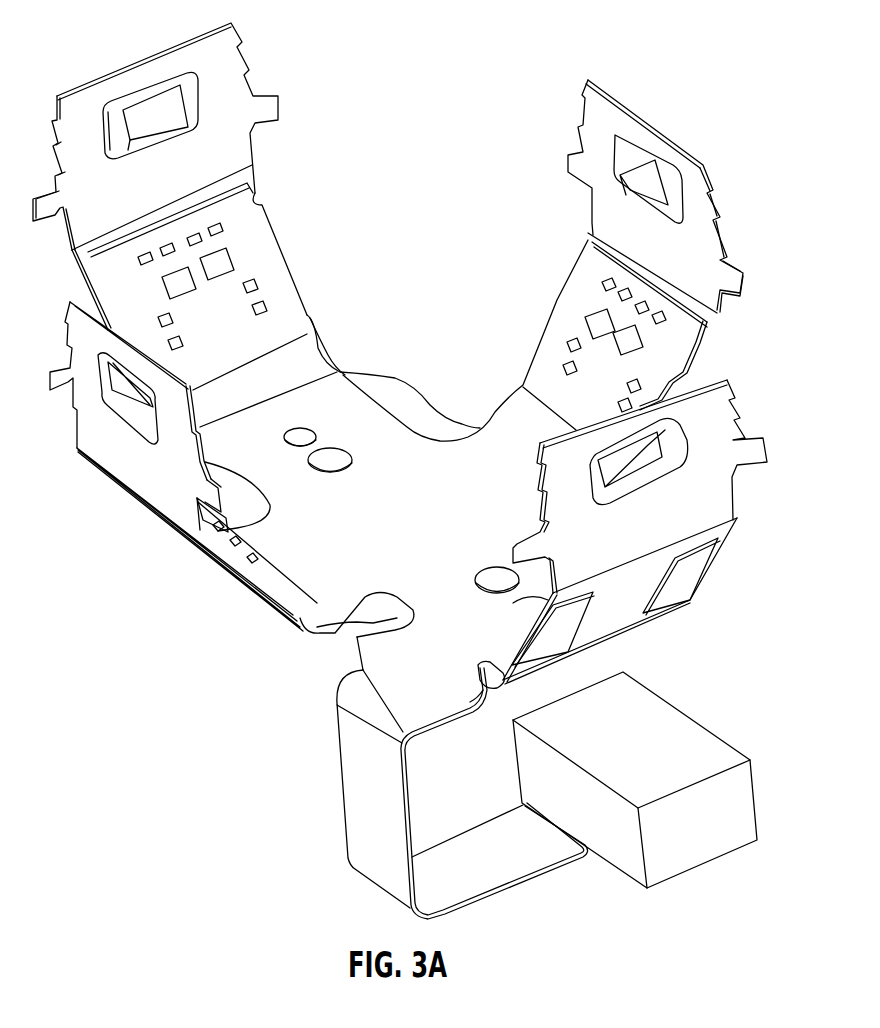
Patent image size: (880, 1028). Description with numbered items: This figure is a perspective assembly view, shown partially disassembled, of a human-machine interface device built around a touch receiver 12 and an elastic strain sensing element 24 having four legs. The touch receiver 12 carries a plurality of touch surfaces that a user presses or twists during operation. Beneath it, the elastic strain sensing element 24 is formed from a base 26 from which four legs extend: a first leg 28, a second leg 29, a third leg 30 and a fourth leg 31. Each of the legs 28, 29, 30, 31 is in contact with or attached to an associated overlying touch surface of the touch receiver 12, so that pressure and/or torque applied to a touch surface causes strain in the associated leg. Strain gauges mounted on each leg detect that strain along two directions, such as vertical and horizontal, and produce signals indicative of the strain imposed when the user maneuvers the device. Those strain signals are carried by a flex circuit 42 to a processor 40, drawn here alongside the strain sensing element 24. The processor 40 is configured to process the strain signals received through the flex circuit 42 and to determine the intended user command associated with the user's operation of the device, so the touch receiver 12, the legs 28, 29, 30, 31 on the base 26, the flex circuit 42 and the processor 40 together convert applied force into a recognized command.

The touch receiver 12 is at (153, 585).
The elastic strain sensing element 24 is at (780, 437).
The base 26 is at (426, 410).
The first leg 28 is at (225, 42).
The second leg 29 is at (703, 243).
The third leg 30 is at (728, 495).
The fourth leg 31 is at (90, 433).
The processor 40 is at (697, 850).
The flex circuit 42 is at (358, 835).